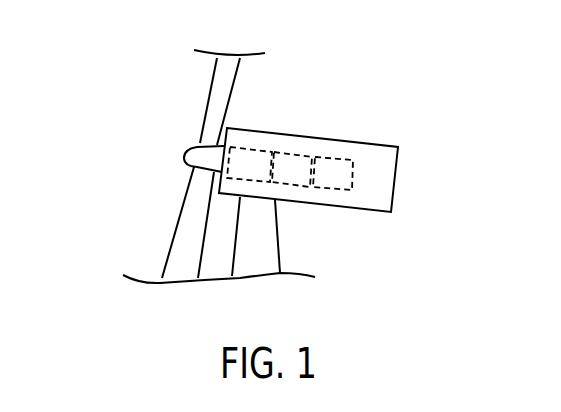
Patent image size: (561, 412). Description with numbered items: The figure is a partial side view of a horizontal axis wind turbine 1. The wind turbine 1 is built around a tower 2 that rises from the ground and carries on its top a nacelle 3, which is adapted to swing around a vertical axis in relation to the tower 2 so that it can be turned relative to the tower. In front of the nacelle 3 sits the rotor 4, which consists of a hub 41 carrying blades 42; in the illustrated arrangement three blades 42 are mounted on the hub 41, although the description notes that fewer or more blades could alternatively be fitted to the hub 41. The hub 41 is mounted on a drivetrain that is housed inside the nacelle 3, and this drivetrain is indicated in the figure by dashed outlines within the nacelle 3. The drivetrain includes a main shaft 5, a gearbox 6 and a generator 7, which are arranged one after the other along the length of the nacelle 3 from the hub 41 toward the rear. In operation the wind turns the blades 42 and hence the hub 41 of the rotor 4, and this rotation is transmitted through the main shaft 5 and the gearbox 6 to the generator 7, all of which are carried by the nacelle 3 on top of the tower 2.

The horizontal axis wind turbine 1 is at (392, 105).
The tower 2 is at (278, 227).
The nacelle 3 is at (400, 155).
The rotor 4 is at (176, 138).
The hub 41 is at (188, 160).
The blades 42 is at (232, 92).
The main shaft 5 is at (252, 143).
The gearbox 6 is at (295, 148).
The generator 7 is at (335, 150).